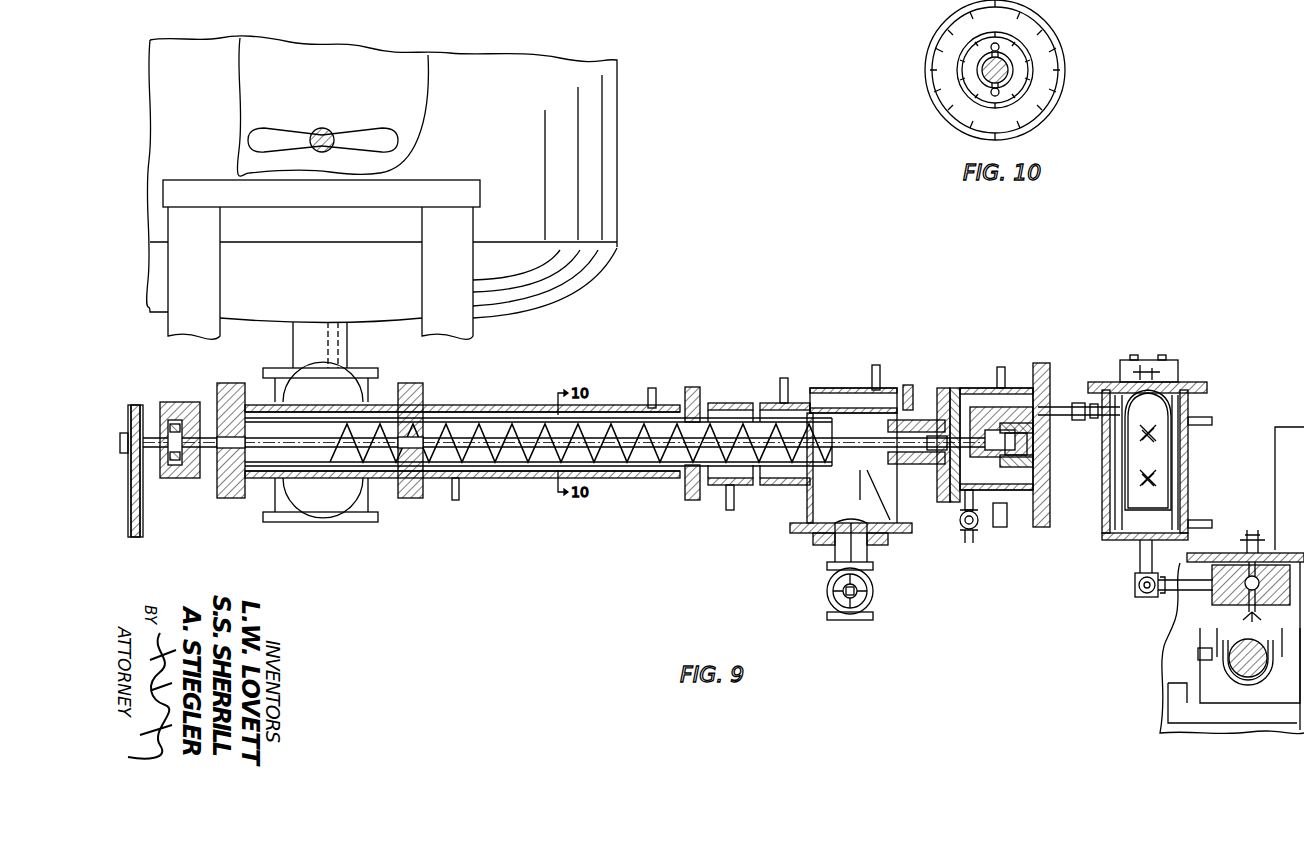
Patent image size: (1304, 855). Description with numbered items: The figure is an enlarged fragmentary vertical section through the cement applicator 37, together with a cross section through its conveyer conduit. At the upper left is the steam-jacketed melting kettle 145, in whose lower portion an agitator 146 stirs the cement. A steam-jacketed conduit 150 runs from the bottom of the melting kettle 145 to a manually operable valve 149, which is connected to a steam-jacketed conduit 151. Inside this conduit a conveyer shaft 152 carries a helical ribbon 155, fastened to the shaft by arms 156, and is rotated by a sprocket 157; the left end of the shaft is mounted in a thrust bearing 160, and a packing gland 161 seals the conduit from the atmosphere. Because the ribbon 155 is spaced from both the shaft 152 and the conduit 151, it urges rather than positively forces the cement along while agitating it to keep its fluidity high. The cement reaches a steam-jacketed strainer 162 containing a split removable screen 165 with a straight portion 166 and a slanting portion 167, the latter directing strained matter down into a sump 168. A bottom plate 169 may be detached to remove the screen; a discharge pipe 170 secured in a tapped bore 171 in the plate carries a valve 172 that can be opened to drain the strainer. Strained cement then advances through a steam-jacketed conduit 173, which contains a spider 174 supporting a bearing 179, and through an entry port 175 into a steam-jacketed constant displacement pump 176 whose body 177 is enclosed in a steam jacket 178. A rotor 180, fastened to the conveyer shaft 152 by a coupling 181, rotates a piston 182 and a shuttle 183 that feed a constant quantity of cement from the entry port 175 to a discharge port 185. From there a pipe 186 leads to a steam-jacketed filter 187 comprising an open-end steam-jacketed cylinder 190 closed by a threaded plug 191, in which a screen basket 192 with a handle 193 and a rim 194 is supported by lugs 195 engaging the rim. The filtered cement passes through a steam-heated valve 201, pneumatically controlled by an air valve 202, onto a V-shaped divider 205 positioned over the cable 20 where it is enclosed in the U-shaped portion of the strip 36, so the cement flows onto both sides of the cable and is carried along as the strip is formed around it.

In FIG. 9, the melting kettle 145 is at (577, 60).
In FIG. 9, the agitator 146 is at (383, 128).
In FIG. 9, the manually operable valve 149 is at (277, 393).
In FIG. 9, the steam-jacketed conduit 150 is at (347, 342).
In FIG. 9, the steam-jacketed conduit 151 is at (503, 422).
In FIG. 10, the steam-jacketed conduit 151 is at (1023, 43).
In FIG. 9, the conveyer shaft 152 is at (450, 440).
In FIG. 9, the helical ribbon 155 is at (515, 452).
In FIG. 10, the helical ribbon 155 is at (975, 68).
In FIG. 10, the arms 156 is at (999, 84).
In FIG. 9, the sprocket 157 is at (136, 404).
In FIG. 9, the thrust bearing 160 is at (173, 402).
In FIG. 9, the packing gland 161 is at (255, 457).
In FIG. 9, the cement applicator 37 is at (585, 368).
In FIG. 9, the steam-jacketed strainer 162 is at (833, 388).
In FIG. 9, the split removable screen 165 is at (855, 495).
In FIG. 9, the straight portion 166 is at (867, 462).
In FIG. 9, the slanting portion 167 is at (805, 528).
In FIG. 9, the sump 168 is at (818, 542).
In FIG. 9, the bottom plate 169 is at (897, 533).
In FIG. 9, the discharge pipe 170 is at (835, 550).
In FIG. 9, the tapped bore 171 is at (873, 537).
In FIG. 9, the valve 172 is at (873, 596).
In FIG. 9, the steam-jacketed conduit 173 is at (917, 420).
In FIG. 9, the spider 174 is at (942, 417).
In FIG. 9, the entry port 175 is at (967, 410).
In FIG. 9, the constant displacement pump 176 is at (1020, 518).
In FIG. 9, the body 177 is at (1023, 388).
In FIG. 9, the steam jacket 178 is at (1043, 365).
In FIG. 9, the bearing 179 is at (893, 385).
In FIG. 9, the rotor 180 is at (1033, 466).
In FIG. 9, the coupling 181 is at (931, 450).
In FIG. 9, the piston 182 is at (1027, 444).
In FIG. 9, the shuttle 183 is at (1033, 426).
In FIG. 9, the discharge port 185 is at (1063, 405).
In FIG. 9, the pipe 186 is at (1083, 402).
In FIG. 9, the steam-jacketed filter 187 is at (1193, 463).
In FIG. 9, the steam-jacketed cylinder 190 is at (1193, 400).
In FIG. 9, the plug 191 is at (1175, 377).
In FIG. 9, the screen basket 192 is at (1172, 480).
In FIG. 9, the handle 193 is at (1180, 370).
In FIG. 9, the rim 194 is at (1190, 418).
In FIG. 9, the lugs 195 is at (1173, 423).
In FIG. 9, the steam-heated valve 201 is at (1247, 533).
In FIG. 9, the air valve 202 is at (1278, 490).
In FIG. 9, the V-shaped divider 205 is at (1243, 620).
In FIG. 9, the strip 36 is at (1217, 638).
In FIG. 9, the cable 20 is at (1230, 670).